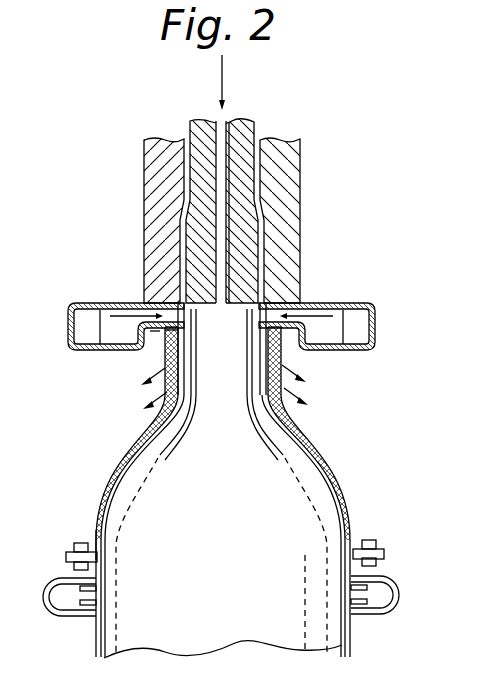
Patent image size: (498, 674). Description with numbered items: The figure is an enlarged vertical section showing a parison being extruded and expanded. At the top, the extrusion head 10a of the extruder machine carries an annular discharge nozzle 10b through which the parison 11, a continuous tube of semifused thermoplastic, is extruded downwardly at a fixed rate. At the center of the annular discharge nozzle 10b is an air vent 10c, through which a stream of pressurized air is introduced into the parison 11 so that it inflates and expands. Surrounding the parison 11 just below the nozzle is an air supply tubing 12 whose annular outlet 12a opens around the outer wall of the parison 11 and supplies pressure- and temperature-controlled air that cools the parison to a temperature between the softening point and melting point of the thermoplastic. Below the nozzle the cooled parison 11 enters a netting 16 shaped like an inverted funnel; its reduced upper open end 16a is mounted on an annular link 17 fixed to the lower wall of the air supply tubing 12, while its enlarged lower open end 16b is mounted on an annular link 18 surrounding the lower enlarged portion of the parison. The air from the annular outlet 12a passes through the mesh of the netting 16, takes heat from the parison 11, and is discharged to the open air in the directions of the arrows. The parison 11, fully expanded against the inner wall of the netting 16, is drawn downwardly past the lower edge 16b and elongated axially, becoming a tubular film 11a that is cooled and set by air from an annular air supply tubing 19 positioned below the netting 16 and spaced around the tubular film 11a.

The extrusion head 10a is at (300, 213).
The annular discharge nozzle 10b is at (258, 305).
The air vent 10c is at (223, 306).
The parison 11 is at (197, 344).
The tubular film 11a is at (347, 612).
The air supply tubing 12 is at (337, 303).
The annular outlet 12a is at (169, 312).
The netting 16 is at (161, 391).
The upper open end of netting 16a is at (146, 351).
The lower open end of netting 16b is at (94, 540).
The annular link 17 is at (131, 327).
The annular link 18 is at (70, 556).
The annular air supply tubing 19 is at (397, 590).